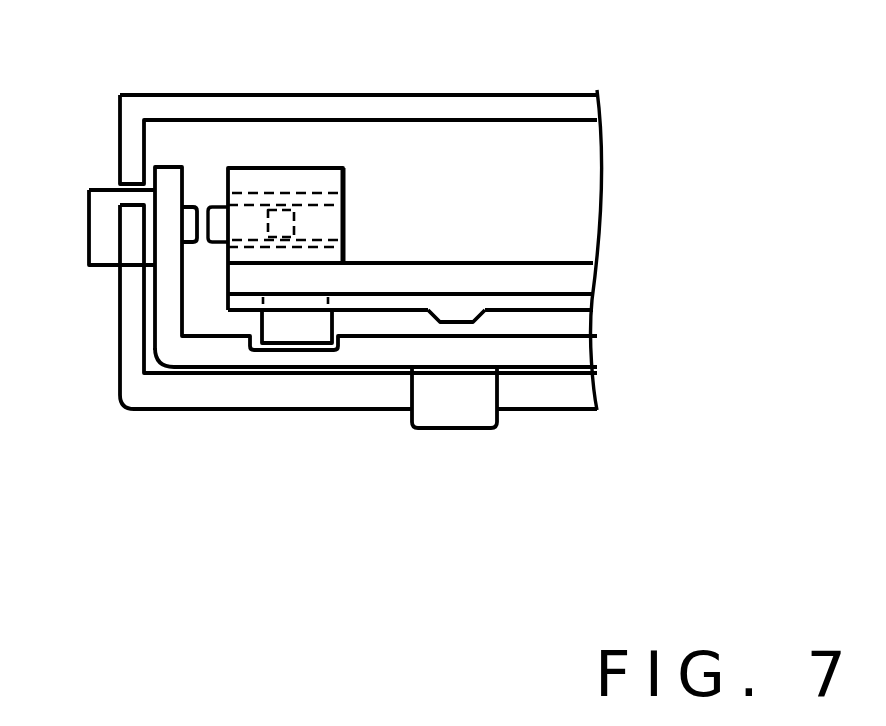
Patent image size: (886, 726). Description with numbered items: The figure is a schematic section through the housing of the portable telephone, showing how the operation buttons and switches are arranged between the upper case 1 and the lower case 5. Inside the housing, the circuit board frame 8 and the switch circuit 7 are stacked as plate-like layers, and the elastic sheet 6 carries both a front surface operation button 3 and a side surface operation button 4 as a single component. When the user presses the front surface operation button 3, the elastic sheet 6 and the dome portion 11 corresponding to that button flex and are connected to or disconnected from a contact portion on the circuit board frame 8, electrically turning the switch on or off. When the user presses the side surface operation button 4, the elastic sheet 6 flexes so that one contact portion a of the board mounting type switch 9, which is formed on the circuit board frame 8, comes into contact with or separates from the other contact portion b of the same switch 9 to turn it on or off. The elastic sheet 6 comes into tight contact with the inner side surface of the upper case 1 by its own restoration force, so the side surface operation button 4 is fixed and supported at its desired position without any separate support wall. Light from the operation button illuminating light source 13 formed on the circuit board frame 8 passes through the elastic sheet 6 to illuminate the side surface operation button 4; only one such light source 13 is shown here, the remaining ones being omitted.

The upper case 1 is at (293, 412).
The front surface operation button 3 is at (468, 430).
The side surface operation button 4 is at (97, 233).
The lower case 5 is at (336, 96).
The elastic sheet 6 is at (553, 350).
The switch circuit 7 is at (568, 300).
The circuit board frame 8 is at (540, 277).
The board mounting type switch 9 is at (259, 168).
The dome portion 11 is at (430, 318).
The operation button illuminating light source 13 is at (277, 340).
The contact portion a is at (218, 215).
The contact portion b is at (332, 222).